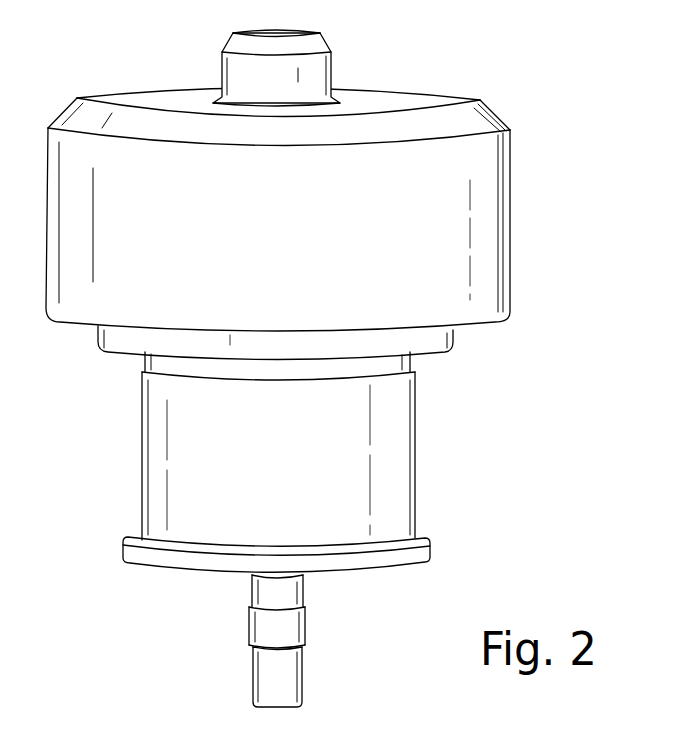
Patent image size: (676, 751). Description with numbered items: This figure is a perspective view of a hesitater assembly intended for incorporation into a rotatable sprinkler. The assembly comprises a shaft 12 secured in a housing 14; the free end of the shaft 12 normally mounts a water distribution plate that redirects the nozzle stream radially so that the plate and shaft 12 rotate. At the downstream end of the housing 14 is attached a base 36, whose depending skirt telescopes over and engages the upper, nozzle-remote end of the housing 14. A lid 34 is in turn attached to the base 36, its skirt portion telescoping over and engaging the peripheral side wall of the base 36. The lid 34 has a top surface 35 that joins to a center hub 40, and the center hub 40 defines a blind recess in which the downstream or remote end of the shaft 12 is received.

The shaft 12 is at (282, 668).
The housing 14 is at (388, 446).
The lid 34 is at (510, 200).
The top surface 35 is at (407, 107).
The base 36 is at (102, 345).
The center hub 40 is at (332, 72).